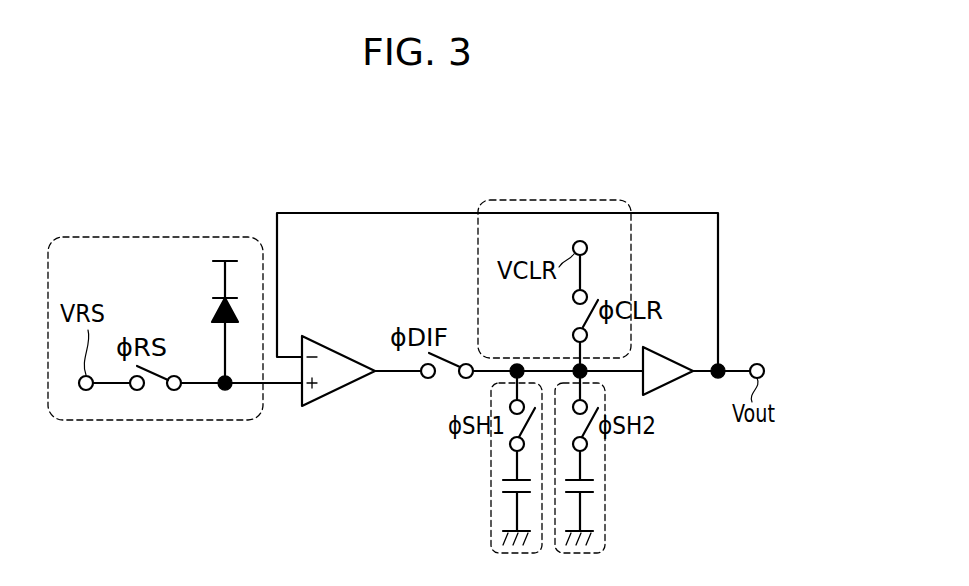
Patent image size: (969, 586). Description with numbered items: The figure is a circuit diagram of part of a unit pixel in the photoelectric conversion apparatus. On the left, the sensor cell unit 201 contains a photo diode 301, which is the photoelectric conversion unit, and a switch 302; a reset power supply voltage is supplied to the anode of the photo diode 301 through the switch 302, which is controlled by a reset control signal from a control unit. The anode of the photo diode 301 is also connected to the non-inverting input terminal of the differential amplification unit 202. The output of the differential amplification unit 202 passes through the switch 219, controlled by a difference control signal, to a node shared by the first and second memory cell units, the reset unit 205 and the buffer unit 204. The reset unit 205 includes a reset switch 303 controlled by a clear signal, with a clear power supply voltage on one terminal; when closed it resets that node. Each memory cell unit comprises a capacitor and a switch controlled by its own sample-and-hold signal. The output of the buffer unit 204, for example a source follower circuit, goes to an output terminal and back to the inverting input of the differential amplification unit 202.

The sensor cell unit 201 is at (222, 421).
The photo diode 301 is at (211, 310).
The switch 302 is at (152, 392).
The differential amplification unit 202 is at (330, 398).
The switch 219 is at (437, 379).
The reset unit 205 is at (625, 203).
The reset switch 303 is at (575, 312).
The buffer unit 204 is at (681, 352).